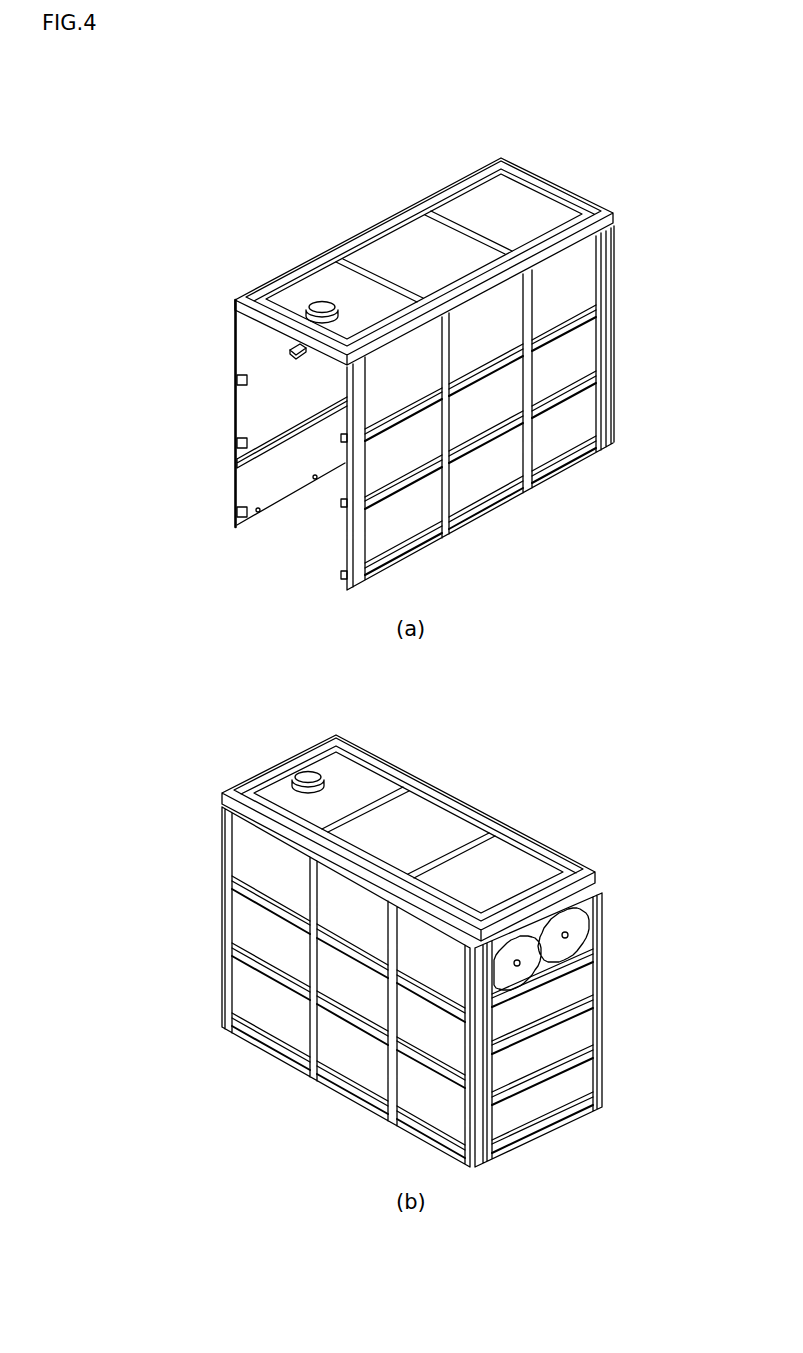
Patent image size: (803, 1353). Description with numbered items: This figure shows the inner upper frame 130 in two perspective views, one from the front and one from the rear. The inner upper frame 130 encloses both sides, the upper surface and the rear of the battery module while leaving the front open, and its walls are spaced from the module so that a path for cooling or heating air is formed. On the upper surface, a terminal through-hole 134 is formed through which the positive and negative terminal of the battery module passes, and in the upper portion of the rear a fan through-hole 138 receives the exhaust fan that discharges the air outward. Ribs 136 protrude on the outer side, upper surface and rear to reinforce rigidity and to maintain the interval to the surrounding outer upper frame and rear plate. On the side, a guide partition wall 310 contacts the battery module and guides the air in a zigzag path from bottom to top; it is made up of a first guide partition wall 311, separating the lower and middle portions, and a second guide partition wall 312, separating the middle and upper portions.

The inner upper frame 130 is at (368, 192).
The terminal through-hole 134 is at (318, 300).
The rib 136 is at (467, 225).
The fan through-hole 138 is at (510, 967).
The guide partition wall 310 is at (132, 403).
The first guide partition wall 311 is at (281, 438).
The second guide partition wall 312 is at (292, 358).